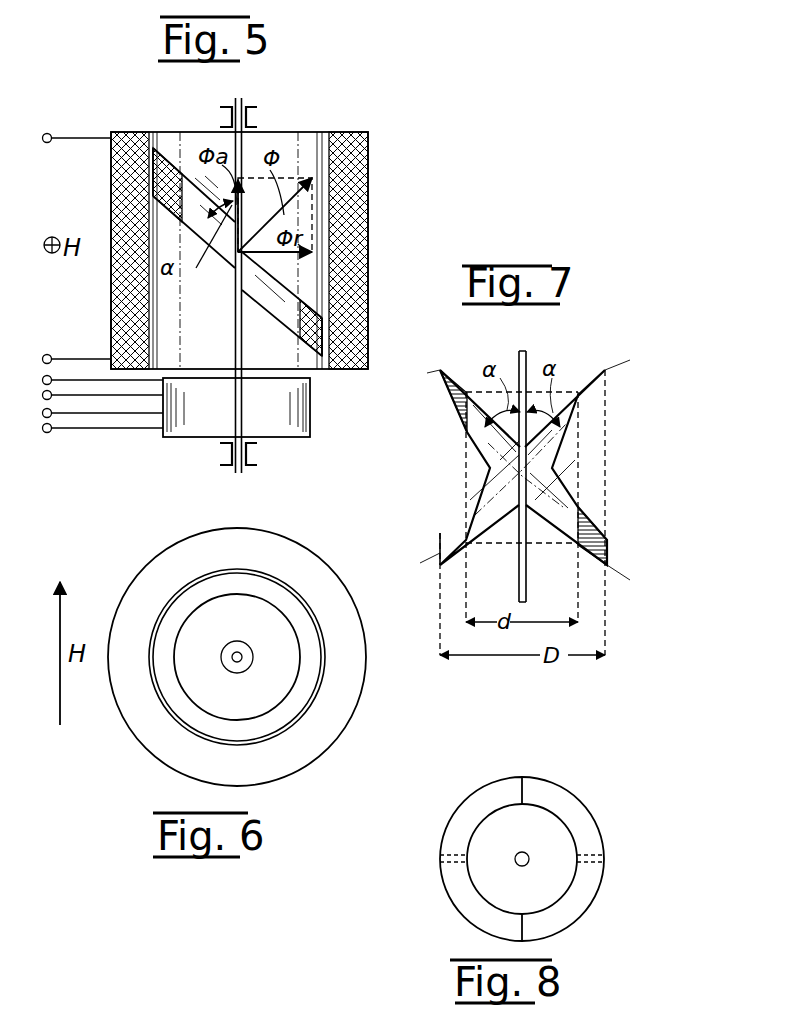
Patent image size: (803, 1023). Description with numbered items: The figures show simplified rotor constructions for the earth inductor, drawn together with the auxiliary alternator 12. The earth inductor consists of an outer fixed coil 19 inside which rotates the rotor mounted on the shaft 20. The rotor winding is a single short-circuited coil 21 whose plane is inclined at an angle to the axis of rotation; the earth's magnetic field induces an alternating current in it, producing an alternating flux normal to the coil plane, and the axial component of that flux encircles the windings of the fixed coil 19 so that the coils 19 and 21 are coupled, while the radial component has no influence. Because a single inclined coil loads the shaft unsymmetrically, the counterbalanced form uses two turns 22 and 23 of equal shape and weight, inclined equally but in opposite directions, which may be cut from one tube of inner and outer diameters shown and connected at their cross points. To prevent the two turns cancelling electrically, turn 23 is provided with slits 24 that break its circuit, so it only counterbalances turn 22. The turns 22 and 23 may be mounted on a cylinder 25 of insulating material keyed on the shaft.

In FIG. 5, the auxiliary alternator 12 is at (292, 410).
In FIG. 5, the outer fixed coil 19 is at (355, 178).
In FIG. 6, the outer fixed coil 19 is at (148, 730).
In FIG. 5, the shaft 20 is at (238, 143).
In FIG. 5, the short-circuited coil 21 is at (305, 338).
In FIG. 6, the short-circuited coil 21 is at (297, 707).
In FIG. 7, the turn 22 is at (452, 382).
In FIG. 8, the turn 22 is at (485, 797).
In FIG. 7, the turn 23 is at (593, 400).
In FIG. 8, the turn 23 is at (582, 825).
In FIG. 8, the slits 24 is at (590, 858).
In FIG. 7, the cylinder of insulating material 25 is at (558, 398).
In FIG. 8, the cylinder of insulating material 25 is at (550, 895).